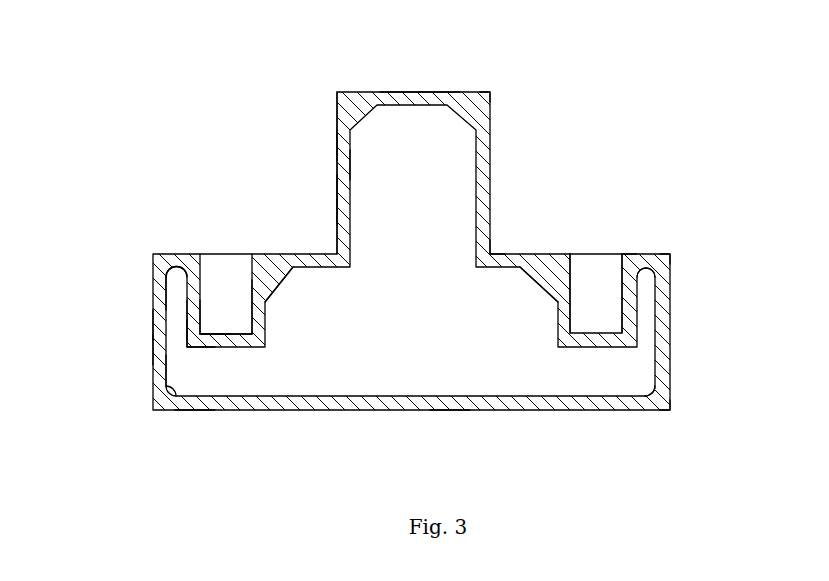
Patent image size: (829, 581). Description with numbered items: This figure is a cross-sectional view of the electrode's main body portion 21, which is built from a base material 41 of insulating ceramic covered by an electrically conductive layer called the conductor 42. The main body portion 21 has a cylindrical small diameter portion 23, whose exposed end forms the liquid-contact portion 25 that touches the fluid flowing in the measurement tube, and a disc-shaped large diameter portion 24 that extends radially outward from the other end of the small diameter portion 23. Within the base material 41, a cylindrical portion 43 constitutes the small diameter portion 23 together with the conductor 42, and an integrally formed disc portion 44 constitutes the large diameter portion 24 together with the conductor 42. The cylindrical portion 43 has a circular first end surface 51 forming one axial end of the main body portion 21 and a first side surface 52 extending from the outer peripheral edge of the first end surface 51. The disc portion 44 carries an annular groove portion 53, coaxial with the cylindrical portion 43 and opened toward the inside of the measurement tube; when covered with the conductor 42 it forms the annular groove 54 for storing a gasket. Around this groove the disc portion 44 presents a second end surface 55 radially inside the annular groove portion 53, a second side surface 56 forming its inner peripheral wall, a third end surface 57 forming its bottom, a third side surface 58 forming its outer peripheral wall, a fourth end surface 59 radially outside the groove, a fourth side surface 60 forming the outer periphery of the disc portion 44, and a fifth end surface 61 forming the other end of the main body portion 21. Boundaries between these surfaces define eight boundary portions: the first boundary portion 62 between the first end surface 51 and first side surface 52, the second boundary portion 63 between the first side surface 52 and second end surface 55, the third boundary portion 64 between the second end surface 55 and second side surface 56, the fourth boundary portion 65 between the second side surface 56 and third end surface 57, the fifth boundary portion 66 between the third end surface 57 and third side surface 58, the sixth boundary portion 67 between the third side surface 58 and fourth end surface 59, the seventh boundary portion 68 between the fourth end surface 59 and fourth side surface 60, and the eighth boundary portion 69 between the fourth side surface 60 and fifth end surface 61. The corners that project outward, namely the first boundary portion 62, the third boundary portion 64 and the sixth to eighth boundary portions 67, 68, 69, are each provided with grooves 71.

The main body portion 21 is at (337, 110).
The small diameter portion 23 is at (336, 186).
The large diameter portion 24 is at (153, 337).
The liquid-contact portion 25 is at (433, 93).
The base material 41 is at (337, 143).
The conductor 42 is at (447, 400).
The cylindrical portion 43 is at (378, 166).
The disc portion 44 is at (153, 348).
The first end surface 51 is at (395, 93).
The first side surface 52 is at (337, 211).
The annular groove portion 53 is at (180, 325).
The annular groove 54 is at (172, 286).
The second end surface 55 is at (306, 263).
The second side surface 56 is at (253, 308).
The third end surface 57 is at (238, 348).
The third side surface 58 is at (210, 323).
The fourth end surface 59 is at (193, 336).
The fourth side surface 60 is at (162, 374).
The fifth end surface 61 is at (194, 398).
The first boundary portion 62 is at (491, 93).
The second boundary portion 63 is at (494, 252).
The third boundary portion 64 is at (559, 252).
The fourth boundary portion 65 is at (578, 322).
The fifth boundary portion 66 is at (619, 322).
The sixth boundary portion 67 is at (628, 252).
The seventh boundary portion 68 is at (672, 254).
The eighth boundary portion 69 is at (672, 410).
The grooves 71 is at (344, 96).